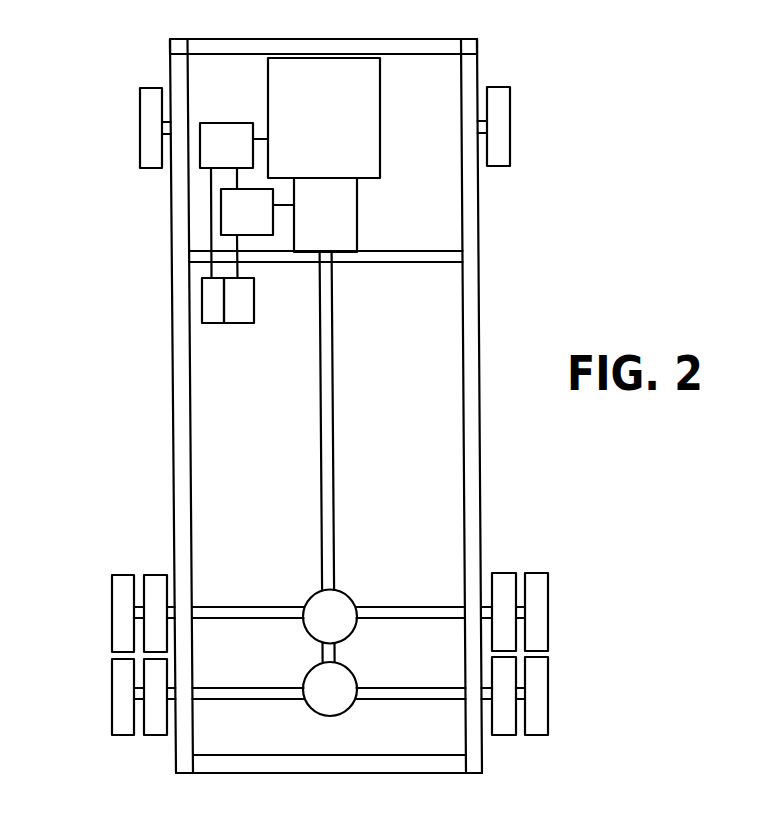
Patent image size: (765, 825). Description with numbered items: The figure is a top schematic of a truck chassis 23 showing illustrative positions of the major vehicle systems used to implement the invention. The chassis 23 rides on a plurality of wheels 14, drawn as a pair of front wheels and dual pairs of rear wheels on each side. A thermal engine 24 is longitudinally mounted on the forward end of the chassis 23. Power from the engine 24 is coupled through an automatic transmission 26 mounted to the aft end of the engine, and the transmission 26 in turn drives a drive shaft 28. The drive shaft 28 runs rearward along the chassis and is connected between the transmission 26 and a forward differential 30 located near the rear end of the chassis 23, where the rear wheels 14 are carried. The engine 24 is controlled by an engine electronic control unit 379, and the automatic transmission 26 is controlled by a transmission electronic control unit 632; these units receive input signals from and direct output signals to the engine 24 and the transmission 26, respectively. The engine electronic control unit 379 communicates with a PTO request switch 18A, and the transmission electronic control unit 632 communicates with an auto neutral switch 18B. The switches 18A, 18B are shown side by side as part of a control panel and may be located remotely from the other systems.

The wheels 14 is at (113, 733).
The PTO request switch 18A is at (213, 323).
The auto neutral switch 18B is at (252, 323).
The chassis 23 is at (478, 282).
The thermal engine 24 is at (342, 124).
The automatic transmission 26 is at (340, 224).
The drive shaft 28 is at (332, 443).
The forward differential 30 is at (352, 597).
The engine electronic control unit 379 is at (250, 156).
The transmission electronic control unit 632 is at (270, 224).